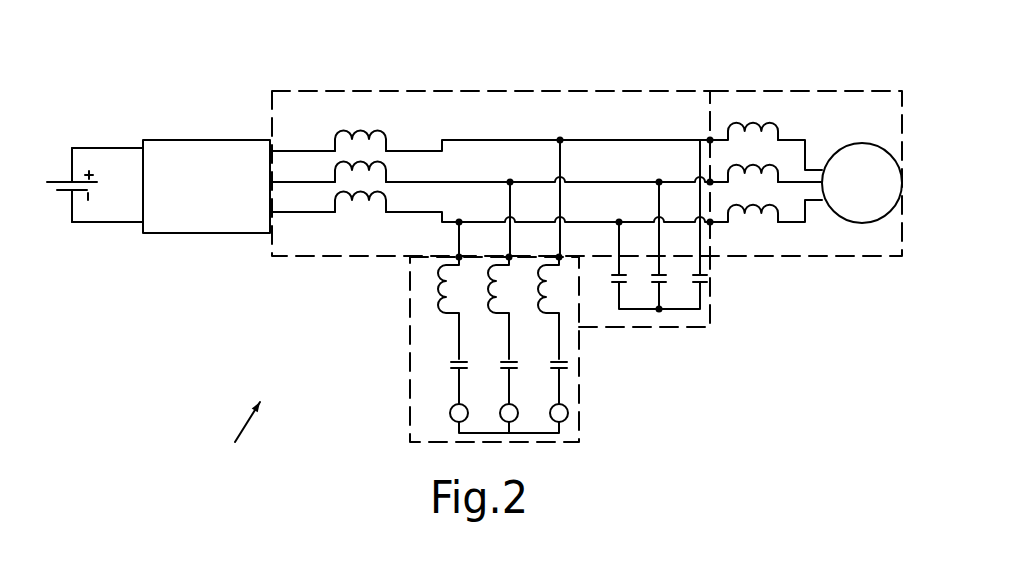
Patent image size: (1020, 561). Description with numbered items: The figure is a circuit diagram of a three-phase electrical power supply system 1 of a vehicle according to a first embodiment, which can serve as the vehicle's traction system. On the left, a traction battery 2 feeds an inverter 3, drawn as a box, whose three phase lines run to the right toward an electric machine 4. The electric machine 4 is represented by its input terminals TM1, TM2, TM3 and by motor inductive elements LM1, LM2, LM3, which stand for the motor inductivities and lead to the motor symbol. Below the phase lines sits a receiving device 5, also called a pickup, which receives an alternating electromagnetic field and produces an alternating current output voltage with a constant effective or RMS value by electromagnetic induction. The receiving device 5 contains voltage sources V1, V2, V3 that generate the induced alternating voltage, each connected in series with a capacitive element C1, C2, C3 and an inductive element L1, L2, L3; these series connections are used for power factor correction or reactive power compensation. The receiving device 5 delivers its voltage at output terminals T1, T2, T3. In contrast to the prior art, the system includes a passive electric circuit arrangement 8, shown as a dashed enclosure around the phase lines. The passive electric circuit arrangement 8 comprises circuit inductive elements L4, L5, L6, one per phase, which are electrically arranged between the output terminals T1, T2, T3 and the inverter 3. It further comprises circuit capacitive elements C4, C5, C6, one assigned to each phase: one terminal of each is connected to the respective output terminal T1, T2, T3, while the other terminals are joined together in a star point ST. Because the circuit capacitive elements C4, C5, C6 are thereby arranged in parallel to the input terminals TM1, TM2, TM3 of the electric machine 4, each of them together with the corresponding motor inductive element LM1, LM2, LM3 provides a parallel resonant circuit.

The electrical power supply system 1 is at (239, 434).
The traction battery 2 is at (57, 180).
The inverter 3 is at (205, 139).
The electric machine 4 is at (816, 91).
The receiving device 5 is at (581, 411).
The passive electric circuit arrangement 8 is at (643, 90).
The inductive element L1 is at (437, 308).
The inductive element L2 is at (485, 308).
The inductive element L3 is at (536, 308).
The circuit inductive element L4 is at (360, 189).
The circuit inductive element L5 is at (360, 158).
The circuit inductive element L6 is at (360, 126).
The capacitive element C1 is at (446, 378).
The capacitive element C2 is at (496, 378).
The capacitive element C3 is at (544, 378).
The circuit capacitive element C4 is at (607, 278).
The circuit capacitive element C5 is at (647, 278).
The circuit capacitive element C6 is at (687, 278).
The voltage source V1 is at (448, 413).
The voltage source V2 is at (498, 413).
The voltage source V3 is at (546, 413).
The output terminal T1 is at (457, 257).
The output terminal T2 is at (508, 257).
The output terminal T3 is at (558, 257).
The input terminal TM1 is at (713, 224).
The input terminal TM2 is at (708, 180).
The input terminal TM3 is at (712, 138).
The motor inductive element LM1 is at (744, 199).
The motor inductive element LM2 is at (744, 159).
The motor inductive element LM3 is at (744, 117).
The star point ST is at (661, 311).